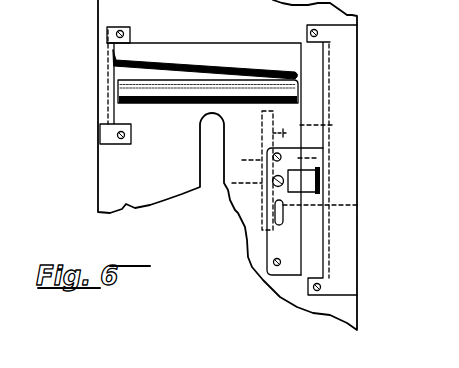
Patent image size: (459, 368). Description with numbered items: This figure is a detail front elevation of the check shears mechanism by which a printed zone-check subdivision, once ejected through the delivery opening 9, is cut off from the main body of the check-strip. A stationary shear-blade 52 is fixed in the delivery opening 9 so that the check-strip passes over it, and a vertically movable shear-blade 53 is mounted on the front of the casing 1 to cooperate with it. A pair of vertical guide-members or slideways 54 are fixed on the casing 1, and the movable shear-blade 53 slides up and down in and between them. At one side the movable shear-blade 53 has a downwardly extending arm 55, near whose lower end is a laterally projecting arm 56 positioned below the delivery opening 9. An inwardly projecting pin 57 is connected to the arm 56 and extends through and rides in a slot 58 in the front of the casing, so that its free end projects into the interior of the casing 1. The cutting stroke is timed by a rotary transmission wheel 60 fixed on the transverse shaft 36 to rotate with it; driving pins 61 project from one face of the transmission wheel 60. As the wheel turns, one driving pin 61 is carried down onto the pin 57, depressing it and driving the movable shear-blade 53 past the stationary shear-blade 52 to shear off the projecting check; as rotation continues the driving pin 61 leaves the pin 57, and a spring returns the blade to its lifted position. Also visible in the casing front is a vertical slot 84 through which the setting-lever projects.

The casing 1 is at (108, 183).
The delivery opening 9 is at (193, 87).
The transverse shaft 36 is at (252, 163).
The stationary shear-blade 52 is at (163, 101).
The movable shear-blade 53 is at (195, 46).
The vertical guide-members or slideways 54 is at (106, 89).
The downwardly extending arm 55 is at (325, 146).
The laterally projecting arm 56 is at (292, 180).
The inwardly projecting pin 57 is at (272, 182).
The slot 58 is at (284, 217).
The rotary transmission wheel 60 is at (285, 137).
The driving pins 61 is at (335, 124).
The vertical slot 84 is at (208, 151).